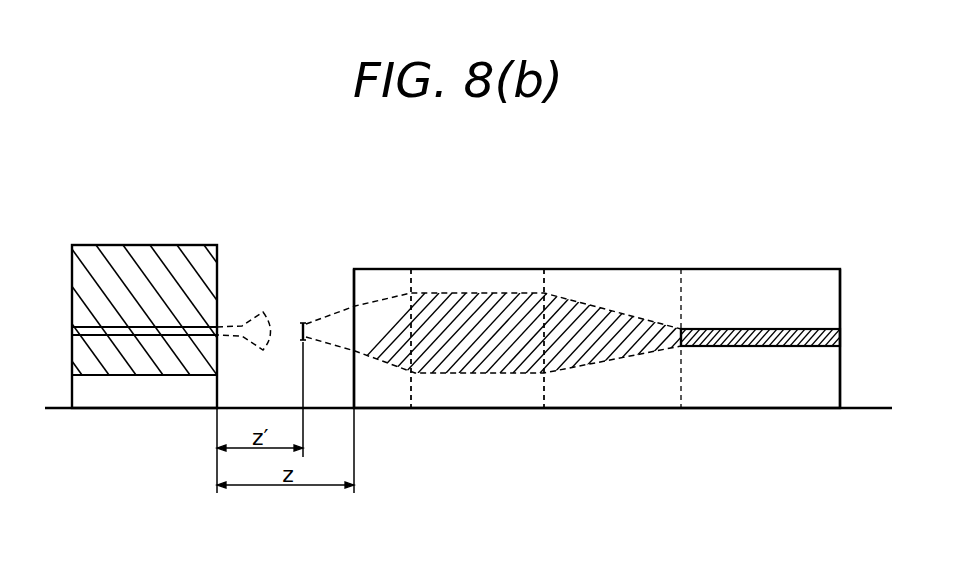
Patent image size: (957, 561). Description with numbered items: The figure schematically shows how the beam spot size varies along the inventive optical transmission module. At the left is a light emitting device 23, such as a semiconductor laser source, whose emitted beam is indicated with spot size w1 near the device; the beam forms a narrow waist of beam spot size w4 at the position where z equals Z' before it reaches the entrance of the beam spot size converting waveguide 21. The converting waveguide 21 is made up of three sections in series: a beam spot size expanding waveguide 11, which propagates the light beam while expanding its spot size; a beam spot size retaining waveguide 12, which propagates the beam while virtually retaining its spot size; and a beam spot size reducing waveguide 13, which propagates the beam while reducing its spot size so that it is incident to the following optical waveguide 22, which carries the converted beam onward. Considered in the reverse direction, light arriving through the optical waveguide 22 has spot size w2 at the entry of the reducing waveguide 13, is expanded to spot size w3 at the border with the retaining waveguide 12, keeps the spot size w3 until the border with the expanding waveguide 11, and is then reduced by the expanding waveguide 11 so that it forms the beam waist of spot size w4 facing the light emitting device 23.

The beam spot size expanding waveguide 11 is at (411, 265).
The beam spot size retaining waveguide 12 is at (412, 265).
The beam spot size reducing waveguide 13 is at (681, 265).
The beam spot size converting waveguide 21 is at (681, 200).
The optical waveguide 22 is at (683, 200).
The light emitting device 23 is at (146, 251).
The beam width at laser output w1 is at (218, 327).
The spot size W2 w2 is at (680, 345).
The spot size W3 w3 is at (412, 335).
The beam spot size W4 w4 is at (302, 322).